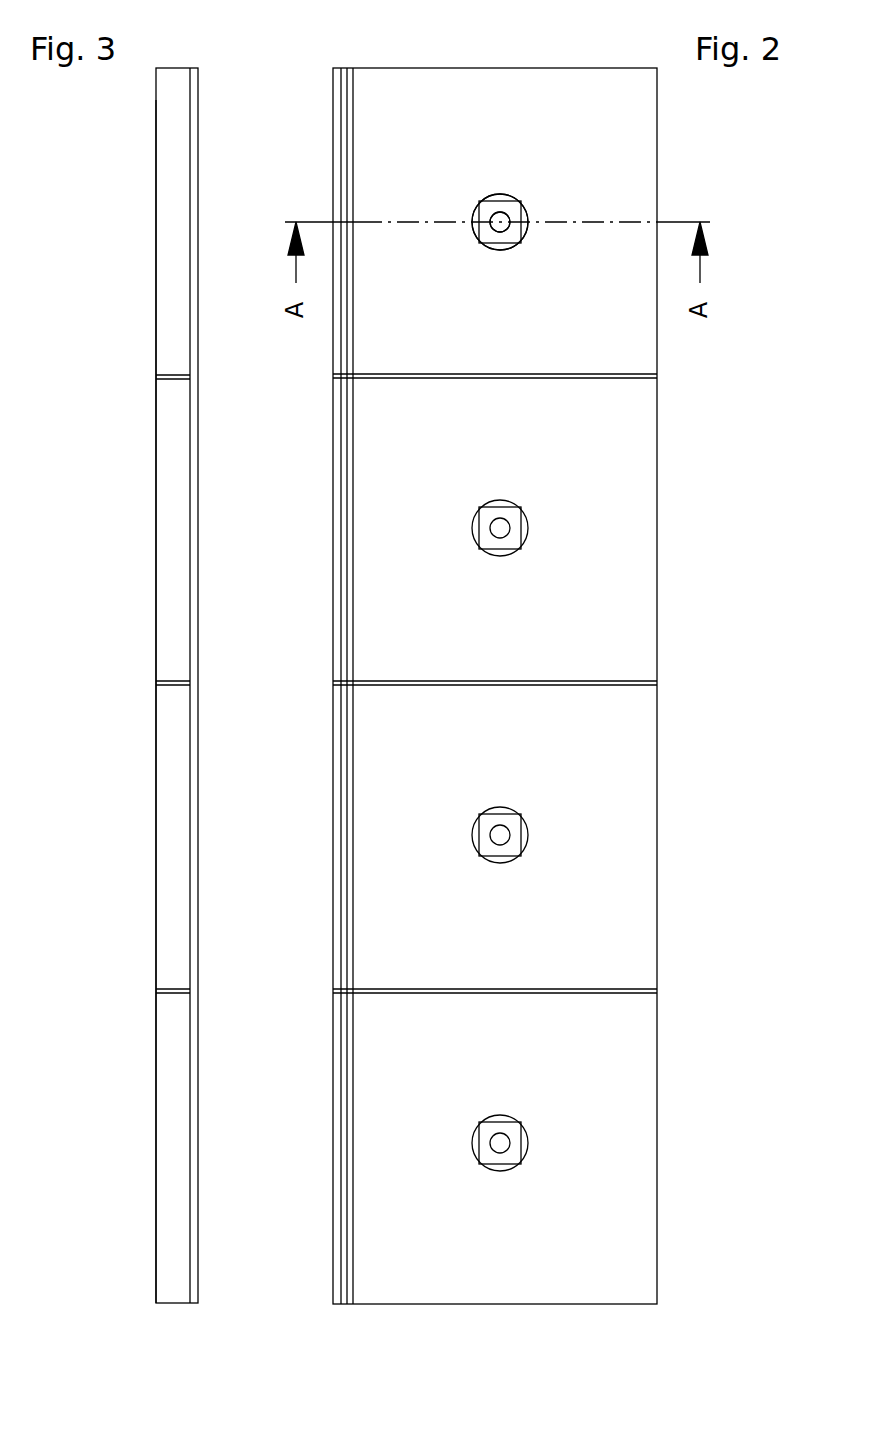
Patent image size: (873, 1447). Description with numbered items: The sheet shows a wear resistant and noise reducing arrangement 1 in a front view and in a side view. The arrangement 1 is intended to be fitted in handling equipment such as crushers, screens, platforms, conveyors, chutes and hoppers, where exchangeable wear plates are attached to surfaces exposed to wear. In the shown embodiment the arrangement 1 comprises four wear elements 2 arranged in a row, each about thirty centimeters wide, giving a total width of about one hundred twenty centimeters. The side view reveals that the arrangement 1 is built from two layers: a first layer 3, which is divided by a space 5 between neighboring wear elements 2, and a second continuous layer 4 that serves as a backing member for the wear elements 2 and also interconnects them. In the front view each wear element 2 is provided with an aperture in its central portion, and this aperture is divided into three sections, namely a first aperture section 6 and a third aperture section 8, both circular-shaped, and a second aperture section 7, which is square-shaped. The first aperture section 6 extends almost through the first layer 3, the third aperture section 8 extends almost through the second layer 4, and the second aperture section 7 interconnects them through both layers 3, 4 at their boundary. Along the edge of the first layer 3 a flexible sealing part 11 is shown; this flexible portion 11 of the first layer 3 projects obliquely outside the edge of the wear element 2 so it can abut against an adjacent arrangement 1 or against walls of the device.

In FIG. 2, the wear resistant and noise reducing arrangement 1 is at (740, 648).
In FIG. 2, the wear element 2 is at (640, 330).
In FIG. 3, the first layer 3 is at (168, 234).
In FIG. 3, the second continuous layer 4 is at (193, 845).
In FIG. 3, the space 5 is at (190, 377).
In FIG. 2, the first aperture section 6 is at (502, 245).
In FIG. 2, the second aperture section 7 is at (482, 210).
In FIG. 2, the third aperture section 8 is at (500, 218).
In FIG. 2, the flexible sealing part 11 is at (337, 355).